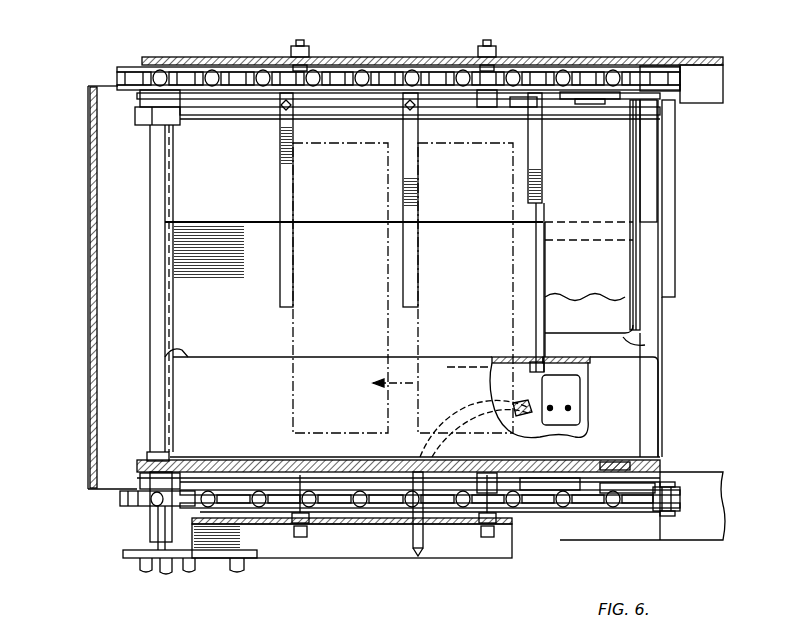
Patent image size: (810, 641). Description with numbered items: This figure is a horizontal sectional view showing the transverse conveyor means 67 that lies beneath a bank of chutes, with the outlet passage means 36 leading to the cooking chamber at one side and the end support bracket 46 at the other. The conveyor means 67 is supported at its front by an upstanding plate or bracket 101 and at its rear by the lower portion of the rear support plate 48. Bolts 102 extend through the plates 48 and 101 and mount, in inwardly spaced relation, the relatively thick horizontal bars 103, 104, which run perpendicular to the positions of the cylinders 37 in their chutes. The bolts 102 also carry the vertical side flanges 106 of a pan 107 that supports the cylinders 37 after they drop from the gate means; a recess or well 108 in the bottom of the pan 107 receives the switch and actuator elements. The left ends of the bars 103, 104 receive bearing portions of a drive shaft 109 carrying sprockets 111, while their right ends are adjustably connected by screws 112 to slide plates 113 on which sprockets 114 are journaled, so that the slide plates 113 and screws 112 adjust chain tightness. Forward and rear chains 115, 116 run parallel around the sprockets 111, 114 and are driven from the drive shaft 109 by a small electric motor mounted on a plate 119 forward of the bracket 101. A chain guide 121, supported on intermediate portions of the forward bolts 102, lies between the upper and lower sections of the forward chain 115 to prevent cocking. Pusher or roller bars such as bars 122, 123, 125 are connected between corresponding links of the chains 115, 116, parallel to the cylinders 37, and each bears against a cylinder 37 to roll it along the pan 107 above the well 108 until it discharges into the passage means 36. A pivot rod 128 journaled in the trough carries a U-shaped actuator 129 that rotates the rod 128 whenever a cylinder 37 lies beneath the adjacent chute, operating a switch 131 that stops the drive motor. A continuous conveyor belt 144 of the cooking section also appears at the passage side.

The passage means 36 is at (722, 472).
The cylinder 37 is at (645, 159).
The end support bracket 46 is at (87, 287).
The rear support plate 48 is at (393, 57).
The conveyor means 67 is at (655, 513).
The plate or bracket 101 is at (484, 500).
The bolt 102 is at (300, 40).
The bar 103 is at (381, 460).
The bar 104 is at (472, 108).
The side flange 106 is at (233, 116).
The pan 107 is at (185, 404).
The recess or well 108 is at (165, 352).
The drive shaft 109 is at (156, 334).
The sprocket 111 is at (158, 72).
The screw 112 is at (524, 460).
The slide plate 113 is at (606, 98).
The sprocket 114 is at (658, 78).
The forward chain 115 is at (578, 508).
The rear chain 116 is at (195, 78).
The plate 119 is at (226, 558).
The chain guide 121 is at (370, 522).
The pusher or roller bar 122 is at (288, 276).
The pusher or roller bar 123 is at (412, 266).
The pusher or roller bar 125 is at (676, 200).
The pivot rod 128 is at (536, 307).
The U-shaped actuator 129 is at (645, 345).
The switch 131 is at (570, 389).
The conveyor belt 144 is at (664, 497).